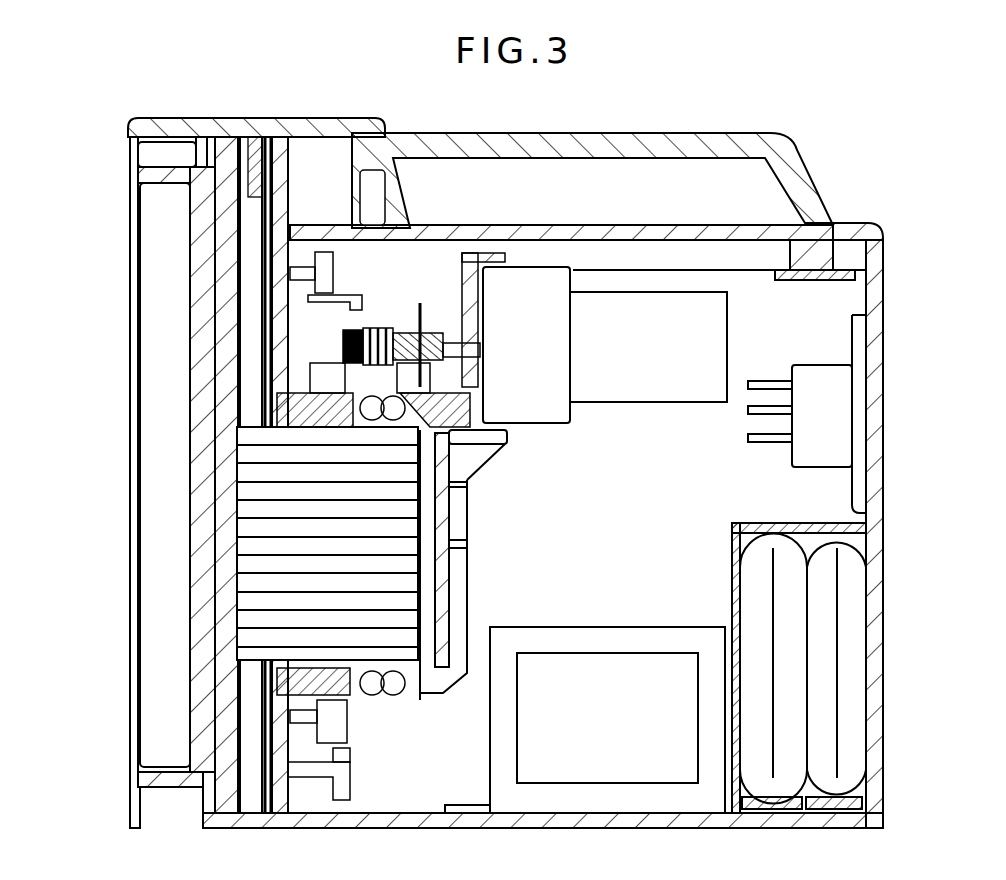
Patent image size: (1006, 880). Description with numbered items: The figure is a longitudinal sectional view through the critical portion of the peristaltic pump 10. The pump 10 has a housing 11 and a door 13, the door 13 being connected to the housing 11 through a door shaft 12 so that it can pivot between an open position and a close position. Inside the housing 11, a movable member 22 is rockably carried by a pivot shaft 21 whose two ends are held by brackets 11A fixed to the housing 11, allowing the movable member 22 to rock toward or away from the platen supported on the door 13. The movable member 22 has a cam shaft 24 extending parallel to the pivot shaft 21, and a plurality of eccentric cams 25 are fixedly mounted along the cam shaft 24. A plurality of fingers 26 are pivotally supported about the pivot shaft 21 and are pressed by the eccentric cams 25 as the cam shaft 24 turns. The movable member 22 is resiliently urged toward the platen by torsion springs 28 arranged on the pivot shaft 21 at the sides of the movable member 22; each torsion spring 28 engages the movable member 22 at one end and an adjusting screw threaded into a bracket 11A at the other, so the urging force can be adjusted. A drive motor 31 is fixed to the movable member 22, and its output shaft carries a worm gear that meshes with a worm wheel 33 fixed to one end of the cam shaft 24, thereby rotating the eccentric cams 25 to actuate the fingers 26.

The peristaltic pump 10 is at (897, 598).
The housing 11 is at (686, 148).
The brackets 11A is at (283, 140).
The door shaft 12 is at (218, 136).
The door 13 is at (124, 500).
The pivot shaft 21 is at (265, 248).
The movable member 22 is at (460, 690).
The cam shaft 24 is at (378, 700).
The eccentric cams 25 is at (408, 568).
The fingers 26 is at (212, 578).
The torsion spring 28 is at (182, 368).
The drive motor 31 is at (666, 390).
The worm wheel 33 is at (395, 330).